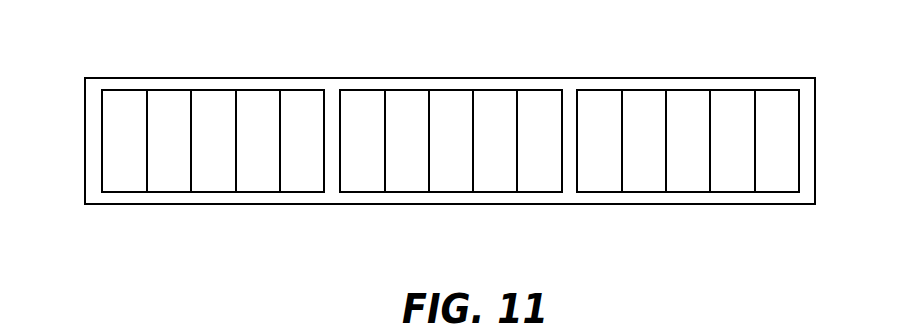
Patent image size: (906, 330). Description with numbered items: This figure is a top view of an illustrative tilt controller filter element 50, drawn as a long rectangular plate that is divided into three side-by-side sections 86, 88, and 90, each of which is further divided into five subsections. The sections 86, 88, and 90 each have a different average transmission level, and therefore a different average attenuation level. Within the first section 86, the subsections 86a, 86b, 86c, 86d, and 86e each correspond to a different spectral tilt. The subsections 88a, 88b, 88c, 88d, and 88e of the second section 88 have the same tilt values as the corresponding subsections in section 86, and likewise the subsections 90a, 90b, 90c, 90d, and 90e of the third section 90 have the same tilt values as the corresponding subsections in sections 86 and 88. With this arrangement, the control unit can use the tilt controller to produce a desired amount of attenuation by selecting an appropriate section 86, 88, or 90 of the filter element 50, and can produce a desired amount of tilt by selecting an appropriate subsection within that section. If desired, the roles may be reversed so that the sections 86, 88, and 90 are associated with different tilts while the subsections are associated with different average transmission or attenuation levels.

The filter element 50 is at (735, 204).
The section 86 is at (168, 192).
The subsection 86a is at (122, 98).
The subsection 86b is at (165, 98).
The subsection 86c is at (211, 98).
The subsection 86d is at (254, 98).
The subsection 86e is at (301, 98).
The section 88 is at (406, 192).
The subsection 88a is at (360, 98).
The subsection 88b is at (402, 98).
The subsection 88c is at (449, 98).
The subsection 88d is at (491, 98).
The subsection 88e is at (539, 98).
The section 90 is at (645, 192).
The subsection 90a is at (597, 98).
The subsection 90b is at (639, 98).
The subsection 90c is at (687, 98).
The subsection 90d is at (728, 98).
The subsection 90e is at (777, 98).